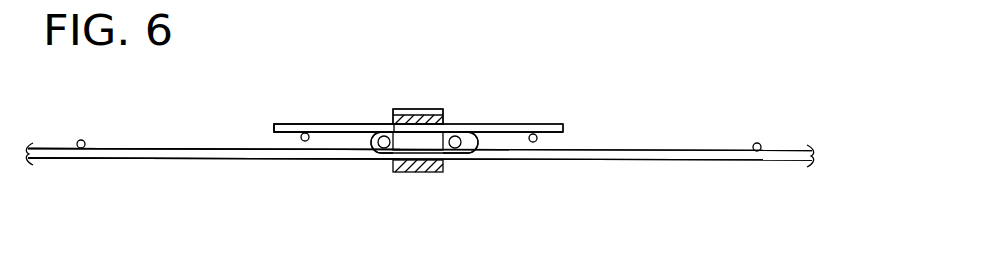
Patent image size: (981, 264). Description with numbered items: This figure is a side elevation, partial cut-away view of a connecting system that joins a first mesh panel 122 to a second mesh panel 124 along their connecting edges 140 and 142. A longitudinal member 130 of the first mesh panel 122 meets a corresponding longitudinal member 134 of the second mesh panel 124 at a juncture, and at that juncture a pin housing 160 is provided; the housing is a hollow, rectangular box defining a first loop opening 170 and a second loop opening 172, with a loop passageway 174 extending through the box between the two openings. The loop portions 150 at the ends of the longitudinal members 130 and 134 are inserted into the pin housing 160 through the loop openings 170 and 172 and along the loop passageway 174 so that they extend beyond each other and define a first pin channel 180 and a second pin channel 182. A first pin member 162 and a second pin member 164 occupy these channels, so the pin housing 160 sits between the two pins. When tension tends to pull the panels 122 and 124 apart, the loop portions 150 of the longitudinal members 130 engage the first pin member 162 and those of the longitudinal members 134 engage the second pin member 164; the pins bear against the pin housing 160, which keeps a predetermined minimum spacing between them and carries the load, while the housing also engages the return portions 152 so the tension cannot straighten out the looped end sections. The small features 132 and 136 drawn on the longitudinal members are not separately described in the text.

The first mesh panel 122 is at (620, 140).
The second mesh panel 124 is at (213, 136).
The longitudinal member 130 is at (648, 159).
The aperture 132 is at (535, 134).
The longitudinal member 134 is at (128, 153).
The aperture 136 is at (85, 141).
The connecting edge 140 is at (471, 93).
The connecting edge 142 is at (367, 92).
The loop portion 150 is at (357, 142).
The return portion 152 is at (322, 137).
The pin housing 160 is at (432, 117).
The first pin member 162 is at (455, 149).
The second pin member 164 is at (384, 149).
The first loop opening 170 is at (450, 122).
The second loop opening 172 is at (388, 121).
The loop passageway 174 is at (410, 143).
The first pin channel 180 is at (378, 151).
The second pin channel 182 is at (459, 151).